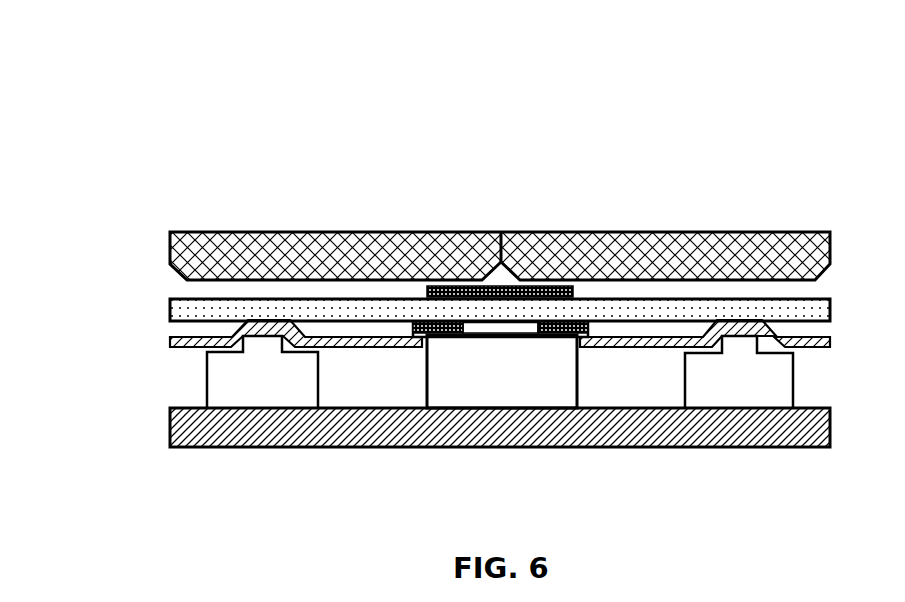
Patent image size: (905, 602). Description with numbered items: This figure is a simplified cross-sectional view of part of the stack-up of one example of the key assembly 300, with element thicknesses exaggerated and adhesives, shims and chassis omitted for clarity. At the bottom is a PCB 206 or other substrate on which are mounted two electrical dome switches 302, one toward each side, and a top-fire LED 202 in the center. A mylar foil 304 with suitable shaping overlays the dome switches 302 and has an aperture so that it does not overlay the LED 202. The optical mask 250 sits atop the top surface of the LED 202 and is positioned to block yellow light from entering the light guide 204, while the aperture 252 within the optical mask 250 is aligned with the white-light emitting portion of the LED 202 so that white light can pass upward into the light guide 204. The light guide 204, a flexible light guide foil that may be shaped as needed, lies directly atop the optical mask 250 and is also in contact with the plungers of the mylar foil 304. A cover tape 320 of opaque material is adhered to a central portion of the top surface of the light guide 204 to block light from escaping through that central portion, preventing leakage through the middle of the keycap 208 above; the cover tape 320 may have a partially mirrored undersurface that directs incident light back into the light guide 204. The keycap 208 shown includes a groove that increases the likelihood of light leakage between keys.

The key assembly 300 is at (60, 108).
The top-fire LED 202 is at (476, 393).
The light guide 204 is at (168, 307).
The PCB 206 is at (168, 426).
The keycap 208 is at (755, 260).
The optical mask 250 is at (418, 322).
The aperture 252 is at (497, 327).
The dome switches 302 is at (272, 388).
The mylar foil 304 is at (353, 350).
The cover tape 320 is at (577, 287).